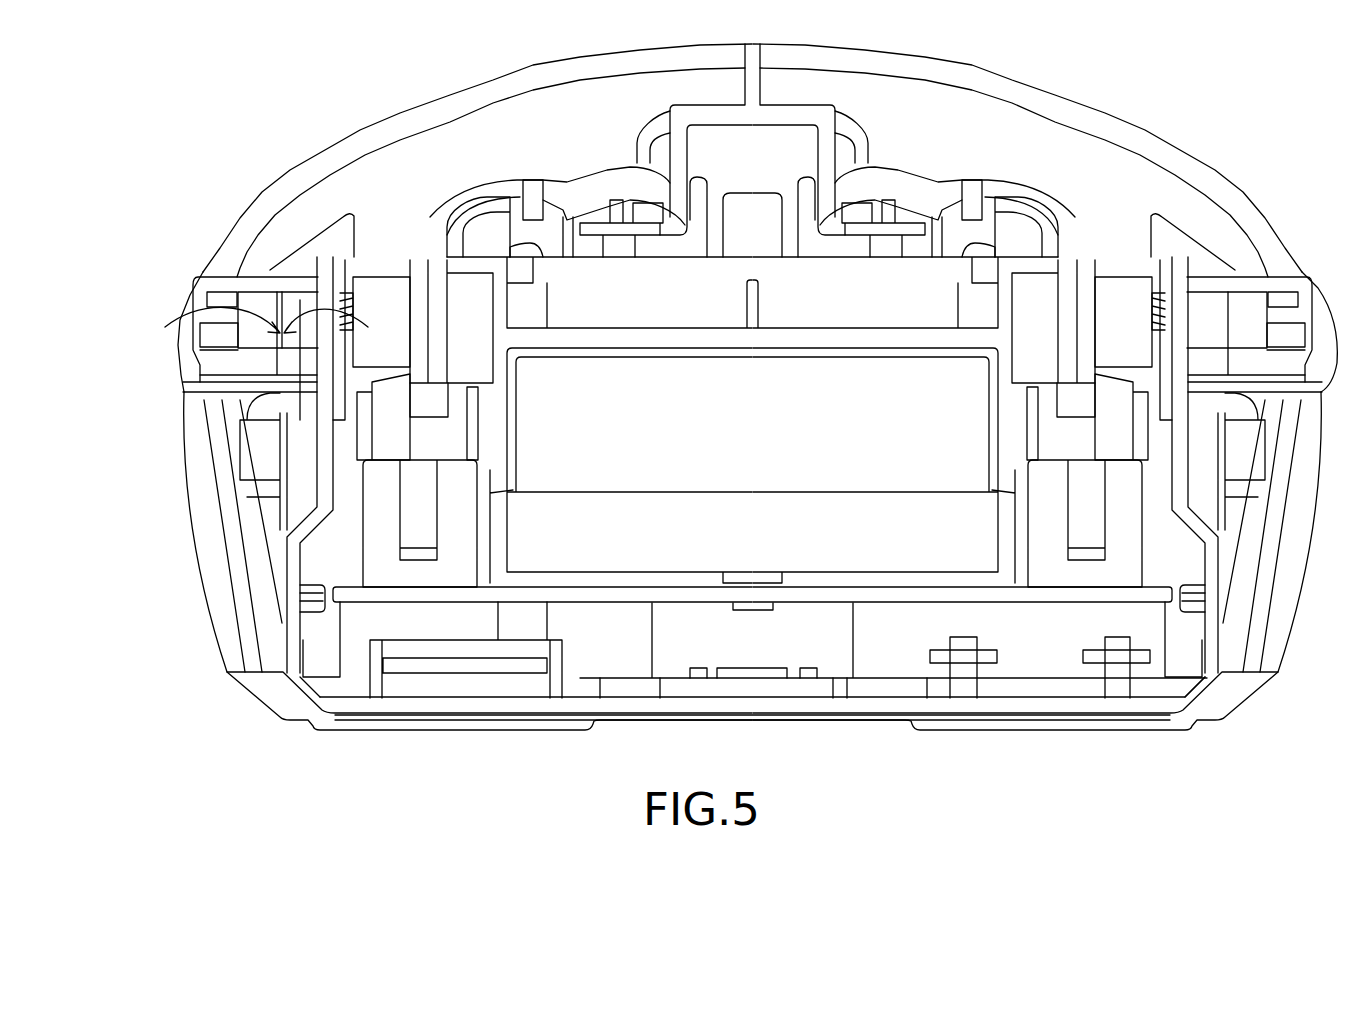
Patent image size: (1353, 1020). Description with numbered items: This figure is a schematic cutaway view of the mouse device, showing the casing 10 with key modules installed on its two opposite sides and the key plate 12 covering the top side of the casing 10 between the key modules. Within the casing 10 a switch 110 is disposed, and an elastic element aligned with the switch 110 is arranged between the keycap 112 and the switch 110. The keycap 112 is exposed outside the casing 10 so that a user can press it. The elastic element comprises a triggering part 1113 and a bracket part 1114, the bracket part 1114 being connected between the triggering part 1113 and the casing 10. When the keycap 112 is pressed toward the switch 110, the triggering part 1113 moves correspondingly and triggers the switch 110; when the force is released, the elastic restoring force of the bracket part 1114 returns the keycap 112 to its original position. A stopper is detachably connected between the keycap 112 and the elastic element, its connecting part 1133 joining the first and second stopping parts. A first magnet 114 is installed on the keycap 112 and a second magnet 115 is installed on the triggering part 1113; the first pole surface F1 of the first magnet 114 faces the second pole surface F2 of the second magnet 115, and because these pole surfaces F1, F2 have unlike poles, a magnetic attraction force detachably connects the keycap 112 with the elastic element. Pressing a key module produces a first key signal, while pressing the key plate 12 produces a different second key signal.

The casing 10 is at (1277, 540).
The key plate 12 is at (1183, 163).
The switch 110 is at (375, 295).
The keycap 112 is at (197, 305).
The first magnet 114 is at (250, 305).
The second magnet 115 is at (300, 305).
The triggering part 1113 is at (360, 325).
The bracket part 1114 is at (290, 558).
The connecting part 1133 is at (293, 357).
The first pole surface F1 is at (201, 326).
The second pole surface F2 is at (343, 327).